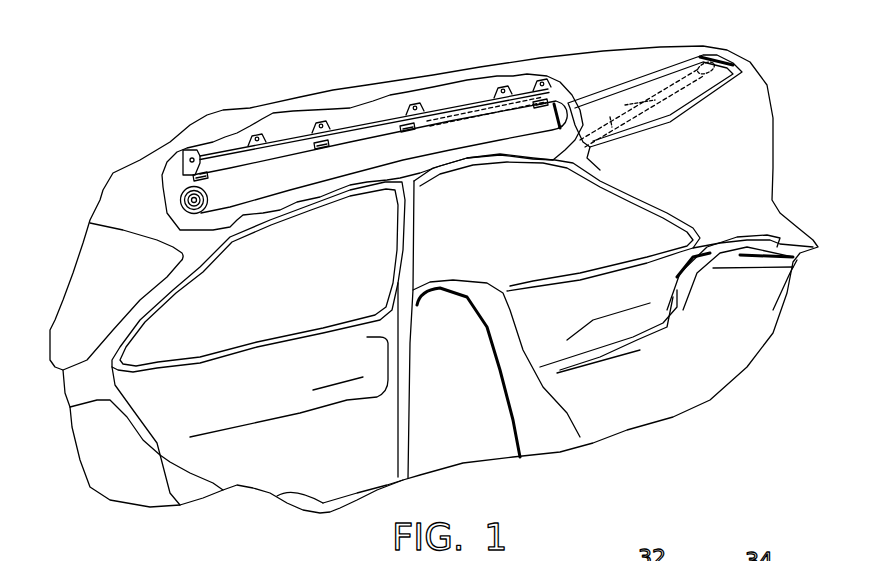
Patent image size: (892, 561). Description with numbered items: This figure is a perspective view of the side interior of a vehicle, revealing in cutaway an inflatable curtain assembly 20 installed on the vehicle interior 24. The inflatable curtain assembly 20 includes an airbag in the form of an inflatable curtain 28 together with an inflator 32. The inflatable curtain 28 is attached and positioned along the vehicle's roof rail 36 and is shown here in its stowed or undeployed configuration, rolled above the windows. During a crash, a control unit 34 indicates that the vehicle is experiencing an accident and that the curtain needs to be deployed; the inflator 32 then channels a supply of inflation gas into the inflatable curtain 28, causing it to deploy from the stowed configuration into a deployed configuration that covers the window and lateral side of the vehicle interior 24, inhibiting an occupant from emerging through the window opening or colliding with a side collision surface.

The inflatable curtain assembly 20 is at (172, 200).
The vehicle interior 24 is at (263, 397).
The inflatable curtain 28 is at (437, 140).
The inflator 32 is at (637, 97).
The control unit 34 is at (710, 65).
The roof rail 36 is at (285, 123).